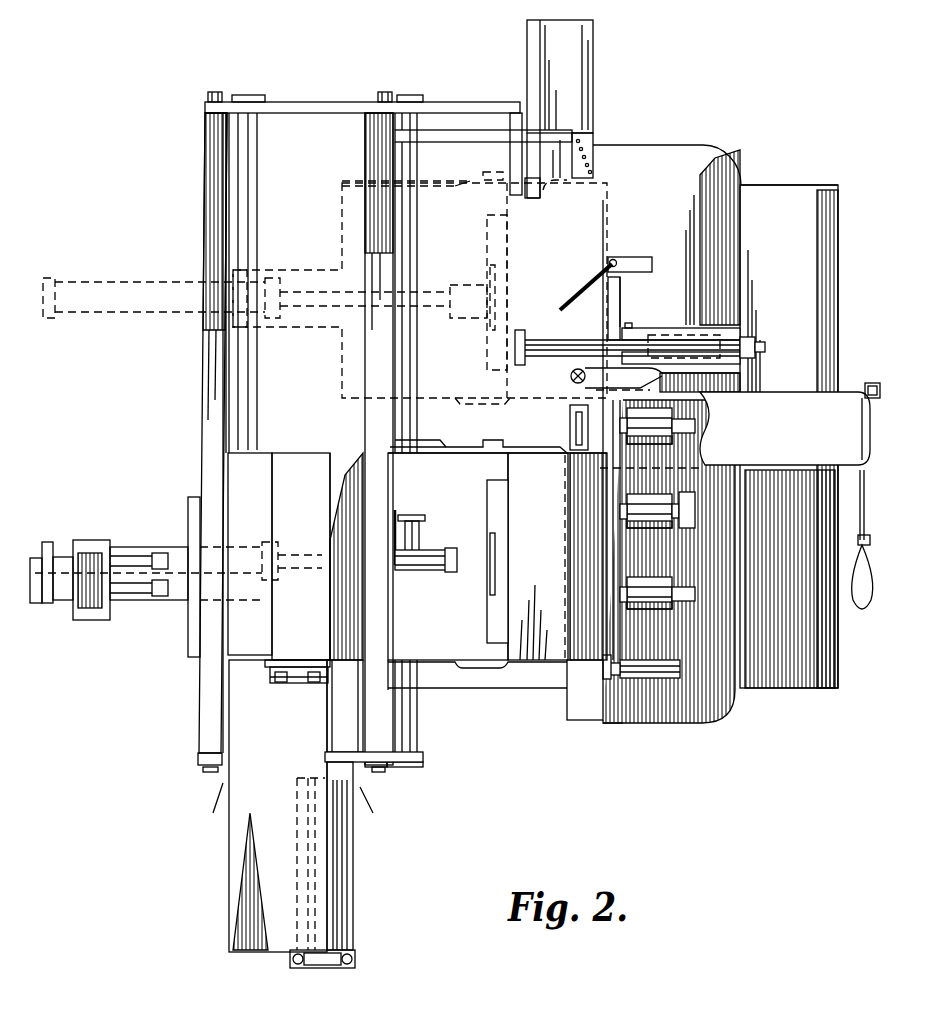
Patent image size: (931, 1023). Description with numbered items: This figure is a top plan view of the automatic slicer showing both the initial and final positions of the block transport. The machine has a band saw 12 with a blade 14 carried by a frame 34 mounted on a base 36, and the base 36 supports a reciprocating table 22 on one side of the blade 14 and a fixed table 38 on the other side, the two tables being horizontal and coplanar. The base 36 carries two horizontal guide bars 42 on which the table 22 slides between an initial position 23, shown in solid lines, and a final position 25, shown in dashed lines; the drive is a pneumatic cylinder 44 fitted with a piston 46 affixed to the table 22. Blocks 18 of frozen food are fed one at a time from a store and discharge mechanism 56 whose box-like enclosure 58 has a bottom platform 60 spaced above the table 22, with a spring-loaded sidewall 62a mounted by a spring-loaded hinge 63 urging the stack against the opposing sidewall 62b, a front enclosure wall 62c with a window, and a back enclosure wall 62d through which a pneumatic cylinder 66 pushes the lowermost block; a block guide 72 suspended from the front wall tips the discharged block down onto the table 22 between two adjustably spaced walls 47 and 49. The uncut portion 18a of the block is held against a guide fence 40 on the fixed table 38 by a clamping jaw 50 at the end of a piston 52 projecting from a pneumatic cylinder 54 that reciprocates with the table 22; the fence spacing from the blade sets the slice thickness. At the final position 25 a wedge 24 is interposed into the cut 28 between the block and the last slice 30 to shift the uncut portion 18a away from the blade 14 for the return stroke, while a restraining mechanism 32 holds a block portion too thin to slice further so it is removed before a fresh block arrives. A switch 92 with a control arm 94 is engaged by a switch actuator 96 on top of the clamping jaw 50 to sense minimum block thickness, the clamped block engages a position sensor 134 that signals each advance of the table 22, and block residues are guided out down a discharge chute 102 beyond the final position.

The band saw 12 is at (870, 460).
The blade 14 is at (570, 428).
The blocks 18 is at (322, 611).
The uncut portion of the block 18a is at (564, 233).
The table 22 is at (462, 222).
The initial position 23 is at (148, 395).
The wedge 24 is at (570, 376).
The final position 25 is at (150, 332).
The cut 28 is at (598, 240).
The last slice 30 is at (624, 312).
The restraining mechanism 32 is at (539, 335).
The frame 34 is at (782, 468).
The base 36 is at (803, 600).
The fixed table 38 is at (646, 705).
The guide fence 40 is at (612, 633).
The horizontal guide bars 42 is at (252, 160).
The pneumatic cylinder 44 is at (384, 873).
The piston 46 is at (352, 870).
The wall 47 is at (492, 690).
The wall 49 is at (482, 440).
The clamping jaw 50 is at (487, 258).
The piston 52 is at (285, 300).
The pneumatic cylinder 54 is at (138, 282).
The store and discharge mechanism 56 is at (158, 652).
The box-like enclosure 58 is at (208, 709).
The bottom platform 60 is at (263, 480).
The sidewall 62a is at (290, 686).
The sidewall 62b is at (270, 450).
The front enclosure wall 62c is at (355, 702).
The back enclosure wall 62d is at (232, 680).
The spring-loaded hinge 63 is at (300, 690).
The pneumatic cylinder 66 is at (145, 595).
The block guide 72 is at (403, 506).
The switch 92 is at (638, 257).
The control arm 94 is at (579, 292).
The switch actuator 96 is at (490, 545).
The discharge chute 102 is at (572, 78).
The position sensor 134 is at (607, 680).